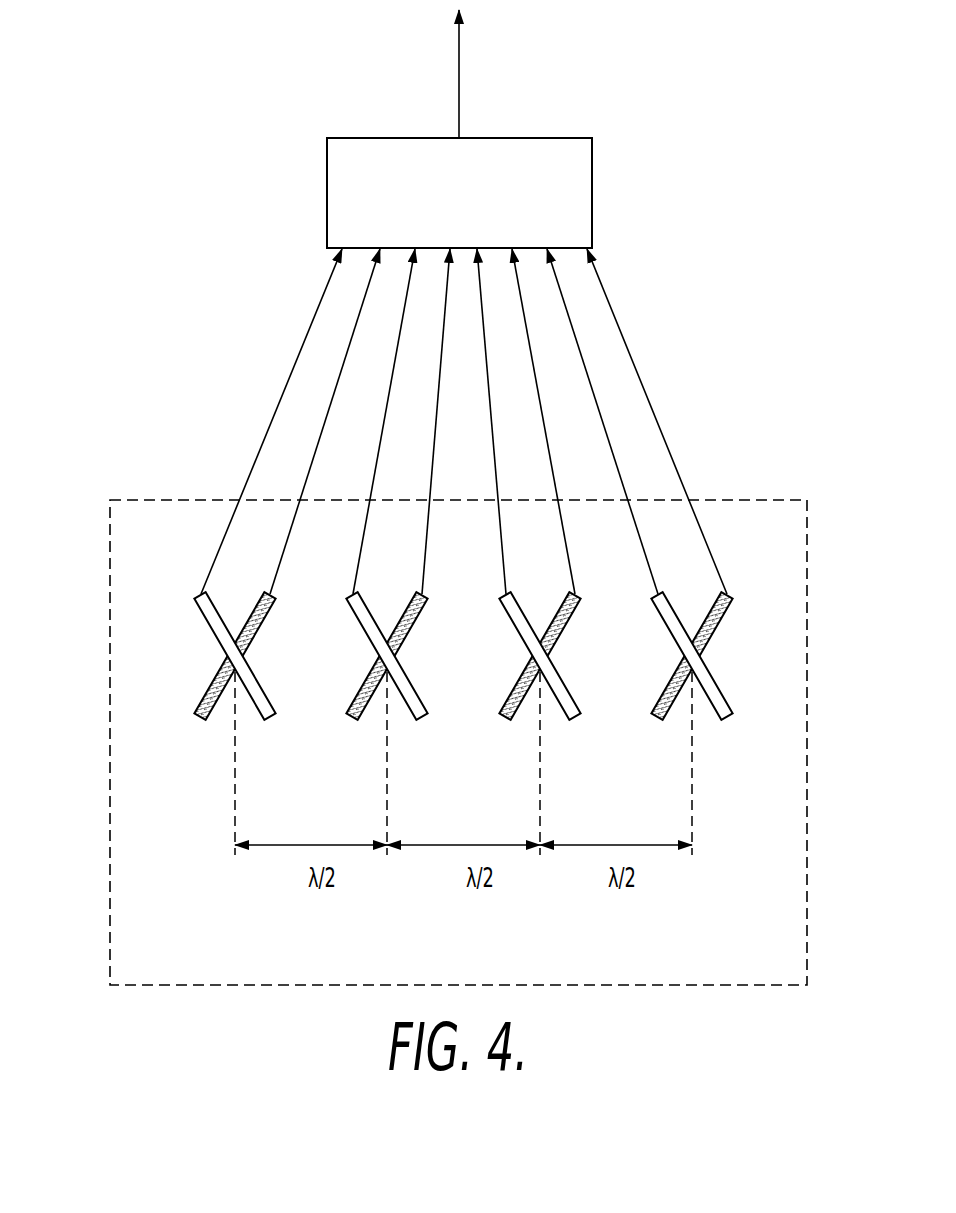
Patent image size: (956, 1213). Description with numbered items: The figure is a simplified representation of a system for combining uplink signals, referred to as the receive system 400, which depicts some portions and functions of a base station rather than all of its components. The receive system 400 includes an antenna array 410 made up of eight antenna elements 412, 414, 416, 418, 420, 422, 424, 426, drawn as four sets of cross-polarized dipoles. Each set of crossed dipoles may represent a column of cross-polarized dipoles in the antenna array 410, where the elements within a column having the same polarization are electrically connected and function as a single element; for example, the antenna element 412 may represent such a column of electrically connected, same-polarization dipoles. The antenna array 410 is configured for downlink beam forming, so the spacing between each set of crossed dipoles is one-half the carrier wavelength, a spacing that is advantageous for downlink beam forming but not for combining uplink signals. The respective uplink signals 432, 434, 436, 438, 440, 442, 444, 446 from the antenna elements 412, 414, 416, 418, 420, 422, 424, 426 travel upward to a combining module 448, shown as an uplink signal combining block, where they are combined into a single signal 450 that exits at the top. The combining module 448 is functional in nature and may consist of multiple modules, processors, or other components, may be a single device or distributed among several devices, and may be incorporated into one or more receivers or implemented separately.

The receive system 400 is at (80, 215).
The antenna array 410 is at (109, 532).
The antenna element 412 is at (207, 621).
The antenna element 414 is at (359, 621).
The antenna element 416 is at (512, 621).
The antenna element 418 is at (664, 621).
The antenna element 420 is at (200, 719).
The antenna element 422 is at (352, 719).
The antenna element 424 is at (505, 719).
The antenna element 426 is at (657, 719).
The uplink signal 432 is at (267, 438).
The uplink signal 434 is at (375, 469).
The uplink signal 436 is at (496, 468).
The uplink signal 438 is at (617, 468).
The uplink signal 440 is at (313, 469).
The uplink signal 442 is at (434, 469).
The uplink signal 444 is at (556, 468).
The uplink signal 446 is at (660, 437).
The combining module 448 is at (503, 138).
The single signal 450 is at (459, 68).